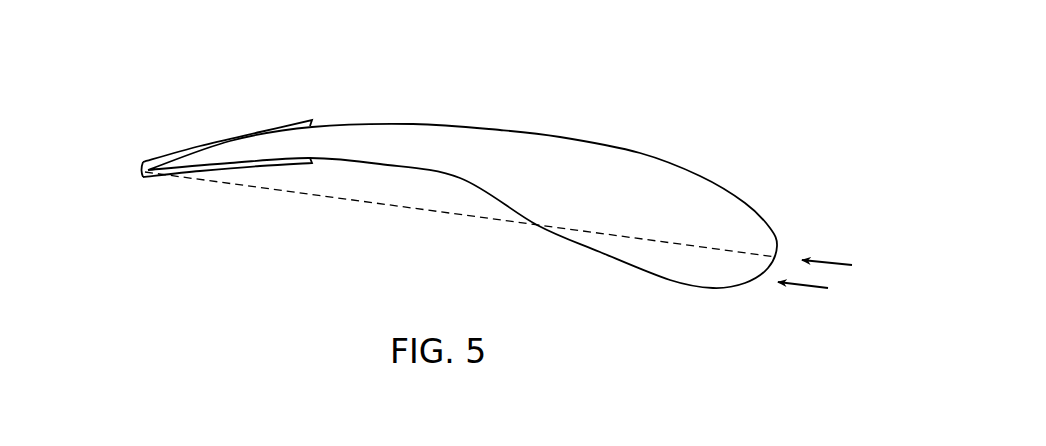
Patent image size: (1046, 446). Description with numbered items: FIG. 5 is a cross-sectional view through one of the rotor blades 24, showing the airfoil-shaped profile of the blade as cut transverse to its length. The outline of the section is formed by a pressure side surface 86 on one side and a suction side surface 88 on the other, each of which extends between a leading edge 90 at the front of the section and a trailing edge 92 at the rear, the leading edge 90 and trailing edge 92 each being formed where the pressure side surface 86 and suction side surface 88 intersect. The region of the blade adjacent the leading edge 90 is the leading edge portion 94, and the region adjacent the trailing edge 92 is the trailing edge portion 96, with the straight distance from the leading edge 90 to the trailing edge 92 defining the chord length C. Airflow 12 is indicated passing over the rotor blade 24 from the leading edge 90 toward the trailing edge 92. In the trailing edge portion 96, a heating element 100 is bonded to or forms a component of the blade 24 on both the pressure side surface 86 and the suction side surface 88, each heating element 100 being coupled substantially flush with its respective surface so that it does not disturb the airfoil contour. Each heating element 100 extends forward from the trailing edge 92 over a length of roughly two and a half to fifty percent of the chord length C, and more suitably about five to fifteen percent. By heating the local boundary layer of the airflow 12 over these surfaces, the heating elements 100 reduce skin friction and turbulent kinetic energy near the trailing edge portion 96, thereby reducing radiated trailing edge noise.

The rotor blade 24 is at (165, 52).
The airflow 12 is at (805, 291).
The pressure side surface 86 is at (538, 232).
The suction side surface 88 is at (608, 141).
The leading edge 90 is at (780, 255).
The trailing edge 92 is at (143, 175).
The leading edge portion 94 is at (735, 186).
The trailing edge portion 96 is at (182, 141).
The heating element 100 is at (256, 124).
The chord length C is at (305, 196).